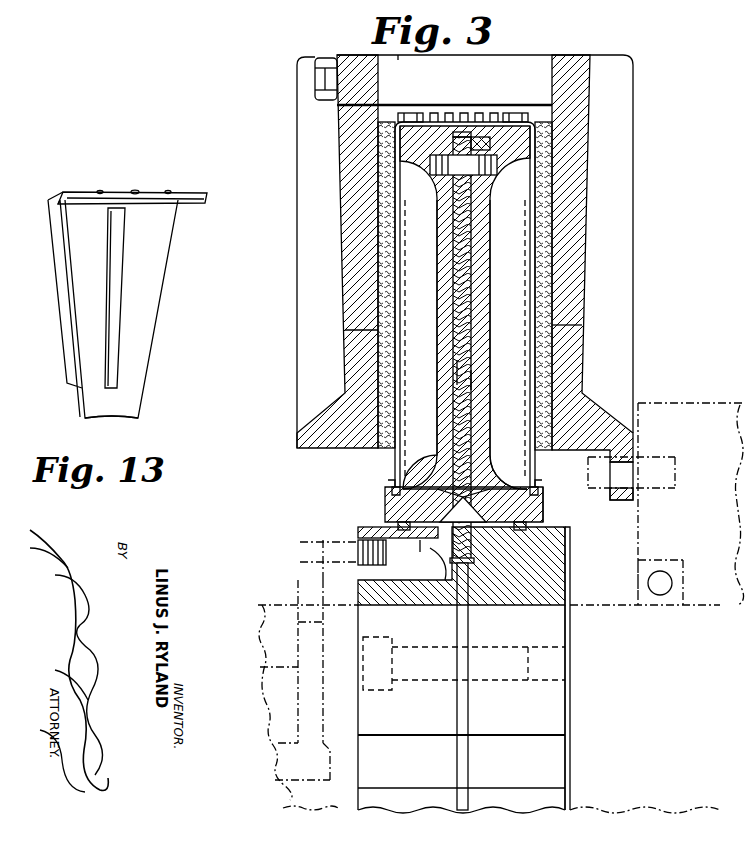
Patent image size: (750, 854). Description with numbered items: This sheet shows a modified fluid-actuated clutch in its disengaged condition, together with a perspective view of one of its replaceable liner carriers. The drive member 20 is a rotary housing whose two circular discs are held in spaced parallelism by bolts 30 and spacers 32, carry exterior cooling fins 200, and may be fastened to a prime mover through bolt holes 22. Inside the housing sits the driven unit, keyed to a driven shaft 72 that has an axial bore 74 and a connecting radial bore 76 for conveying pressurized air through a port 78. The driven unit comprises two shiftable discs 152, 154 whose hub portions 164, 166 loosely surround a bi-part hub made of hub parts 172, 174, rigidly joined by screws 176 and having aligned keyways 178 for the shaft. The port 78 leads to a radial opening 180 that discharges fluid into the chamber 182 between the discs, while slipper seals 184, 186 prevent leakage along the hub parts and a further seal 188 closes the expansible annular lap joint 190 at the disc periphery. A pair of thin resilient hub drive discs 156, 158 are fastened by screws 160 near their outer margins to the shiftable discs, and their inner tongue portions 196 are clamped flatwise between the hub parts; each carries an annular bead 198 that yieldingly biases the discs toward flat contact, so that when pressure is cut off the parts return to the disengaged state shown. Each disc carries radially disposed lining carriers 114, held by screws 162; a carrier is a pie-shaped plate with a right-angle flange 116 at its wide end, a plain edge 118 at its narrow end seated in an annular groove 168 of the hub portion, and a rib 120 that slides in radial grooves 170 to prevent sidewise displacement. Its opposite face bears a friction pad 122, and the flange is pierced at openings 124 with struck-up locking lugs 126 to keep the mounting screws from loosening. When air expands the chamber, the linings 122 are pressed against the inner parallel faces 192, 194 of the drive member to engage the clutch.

In FIG. 3, the drive member 20 is at (592, 231).
In FIG. 3, the bolt holes 22 is at (631, 492).
In FIG. 3, the bolts 30 is at (325, 80).
In FIG. 3, the spacers 32 is at (398, 60).
In FIG. 3, the driven shaft 72 is at (262, 633).
In FIG. 3, the axial bore 74 is at (268, 715).
In FIG. 3, the radial bore 76 is at (275, 670).
In FIG. 3, the port 78 is at (358, 558).
In FIG. 3, the lining carrier 114 is at (380, 180).
In FIG. 13, the lining carrier 114 is at (160, 305).
In FIG. 13, the flange 116 is at (80, 192).
In FIG. 3, the plain edge 118 is at (388, 503).
In FIG. 13, the plain edge 118 is at (103, 422).
In FIG. 13, the rib 120 is at (117, 364).
In FIG. 3, the pad of frictional lining material 122 is at (386, 262).
In FIG. 13, the pad of frictional lining material 122 is at (62, 357).
In FIG. 13, the openings 124 is at (100, 190).
In FIG. 13, the locking lugs 126 is at (118, 190).
In FIG. 3, the shiftable disc 152 is at (442, 318).
In FIG. 3, the shiftable disc 154 is at (480, 322).
In FIG. 3, the hub drive disc 156 is at (458, 372).
In FIG. 3, the hub drive disc 158 is at (470, 386).
In FIG. 3, the screws 160 is at (432, 190).
In FIG. 3, the screws 162 is at (408, 112).
In FIG. 3, the hub portion 164 is at (385, 517).
In FIG. 3, the hub portion 166 is at (535, 517).
In FIG. 3, the annular groove 168 is at (393, 490).
In FIG. 3, the radial grooves 170 is at (465, 340).
In FIG. 3, the hub part 172 is at (360, 583).
In FIG. 3, the hub part 174 is at (555, 592).
In FIG. 3, the screws 176 is at (436, 682).
In FIG. 3, the keyways 178 is at (390, 772).
In FIG. 3, the radial opening 180 is at (435, 538).
In FIG. 3, the chamber 182 is at (425, 564).
In FIG. 3, the slipper seal 184 is at (400, 532).
In FIG. 3, the slipper seal 186 is at (527, 534).
In FIG. 3, the seal 188 is at (478, 137).
In FIG. 3, the annular lap joint 190 is at (486, 137).
In FIG. 3, the inner parallel face 192 is at (376, 331).
In FIG. 3, the inner parallel face 194 is at (552, 325).
In FIG. 3, the tongue portions 196 is at (540, 560).
In FIG. 3, the annular bead 198 is at (435, 482).
In FIG. 3, the cooling fins 200 is at (456, 112).